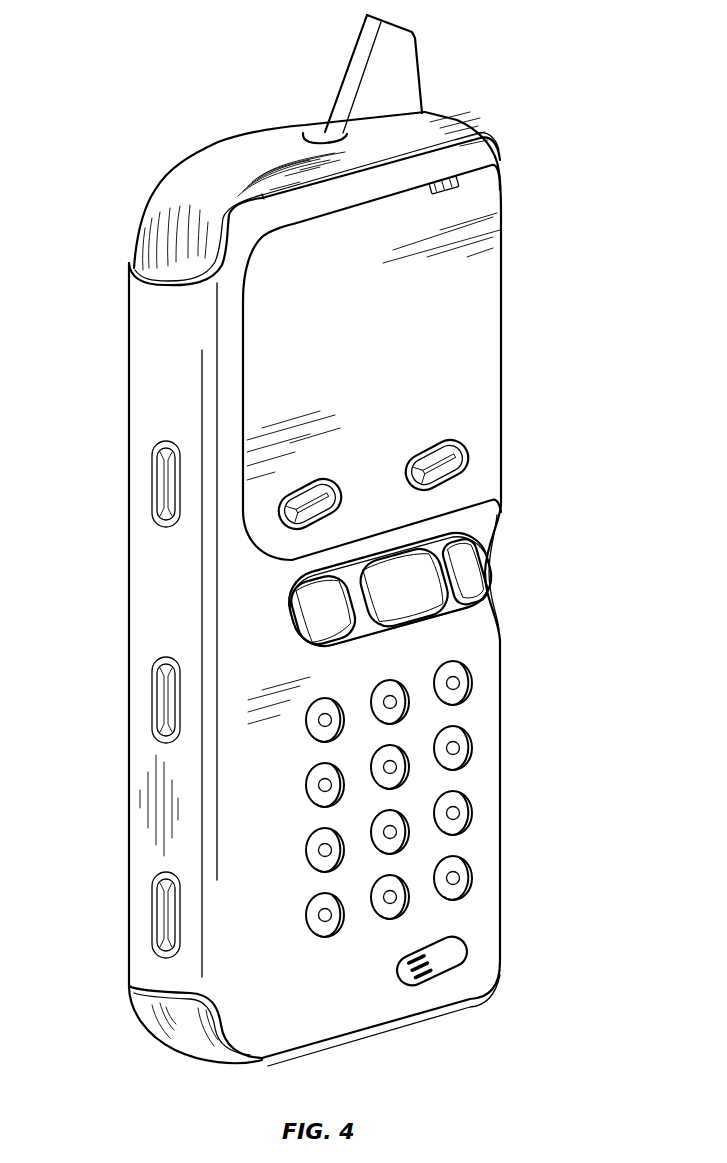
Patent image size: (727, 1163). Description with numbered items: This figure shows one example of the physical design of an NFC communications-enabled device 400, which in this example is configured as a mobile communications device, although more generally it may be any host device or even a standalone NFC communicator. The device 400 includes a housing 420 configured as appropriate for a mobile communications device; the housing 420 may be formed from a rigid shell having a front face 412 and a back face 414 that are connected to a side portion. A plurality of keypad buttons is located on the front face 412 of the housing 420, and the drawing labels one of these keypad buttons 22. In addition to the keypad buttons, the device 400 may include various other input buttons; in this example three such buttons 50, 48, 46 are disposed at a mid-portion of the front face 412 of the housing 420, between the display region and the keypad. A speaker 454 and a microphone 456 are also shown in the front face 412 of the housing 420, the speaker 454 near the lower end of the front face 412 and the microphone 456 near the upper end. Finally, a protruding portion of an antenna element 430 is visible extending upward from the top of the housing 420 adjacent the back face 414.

The NFC communications-enabled device 400 is at (143, 598).
The back face 414 is at (170, 172).
The housing 420 is at (466, 135).
The antenna element 430 is at (405, 80).
The microphone 456 is at (458, 186).
The front face 412 is at (485, 895).
The left function button 50 is at (322, 618).
The center navigation button 48 is at (413, 597).
The right function button 46 is at (465, 573).
The keypad key 22 is at (455, 750).
The speaker 454 is at (455, 950).